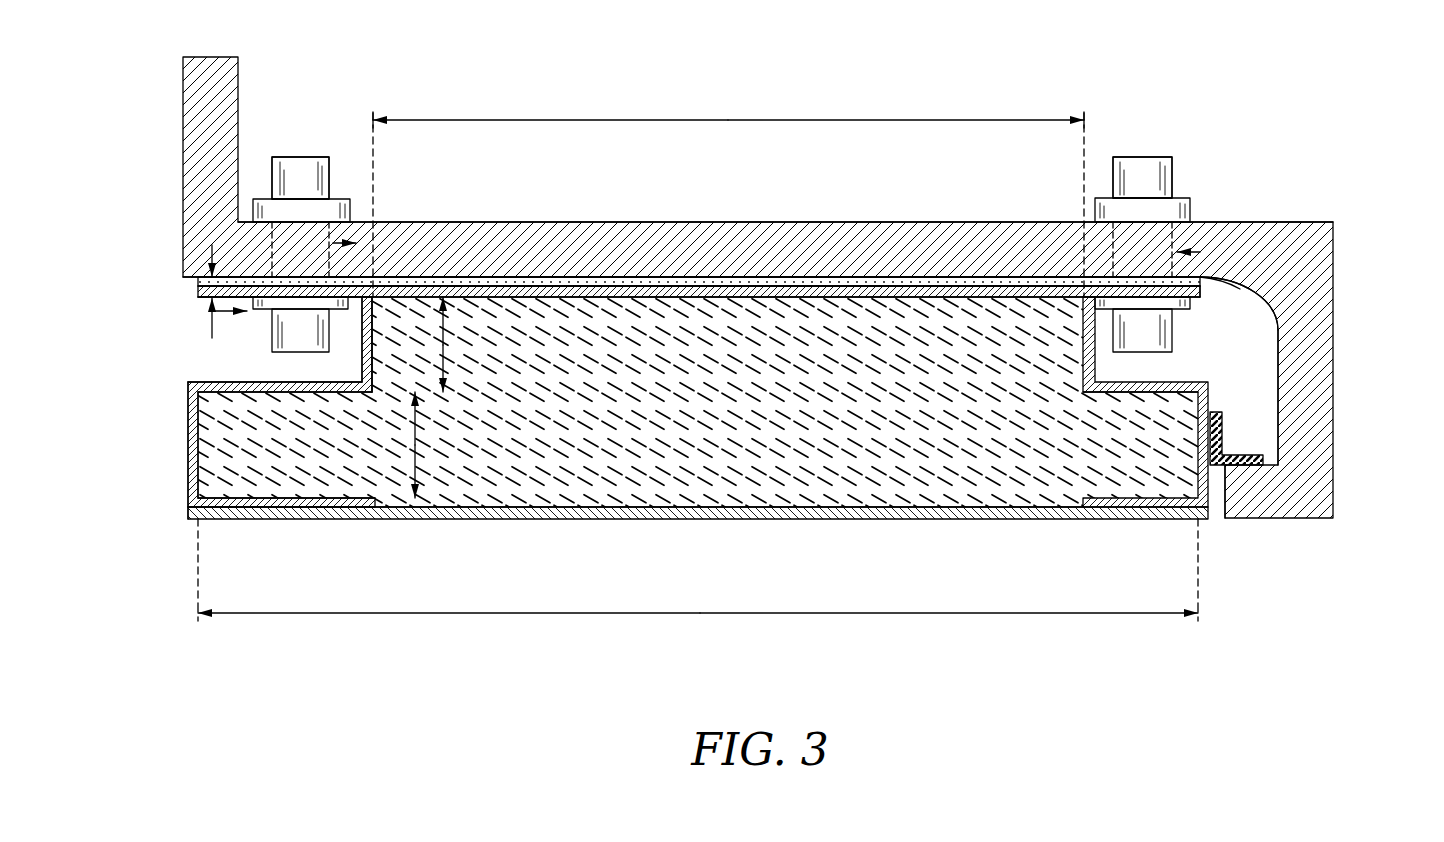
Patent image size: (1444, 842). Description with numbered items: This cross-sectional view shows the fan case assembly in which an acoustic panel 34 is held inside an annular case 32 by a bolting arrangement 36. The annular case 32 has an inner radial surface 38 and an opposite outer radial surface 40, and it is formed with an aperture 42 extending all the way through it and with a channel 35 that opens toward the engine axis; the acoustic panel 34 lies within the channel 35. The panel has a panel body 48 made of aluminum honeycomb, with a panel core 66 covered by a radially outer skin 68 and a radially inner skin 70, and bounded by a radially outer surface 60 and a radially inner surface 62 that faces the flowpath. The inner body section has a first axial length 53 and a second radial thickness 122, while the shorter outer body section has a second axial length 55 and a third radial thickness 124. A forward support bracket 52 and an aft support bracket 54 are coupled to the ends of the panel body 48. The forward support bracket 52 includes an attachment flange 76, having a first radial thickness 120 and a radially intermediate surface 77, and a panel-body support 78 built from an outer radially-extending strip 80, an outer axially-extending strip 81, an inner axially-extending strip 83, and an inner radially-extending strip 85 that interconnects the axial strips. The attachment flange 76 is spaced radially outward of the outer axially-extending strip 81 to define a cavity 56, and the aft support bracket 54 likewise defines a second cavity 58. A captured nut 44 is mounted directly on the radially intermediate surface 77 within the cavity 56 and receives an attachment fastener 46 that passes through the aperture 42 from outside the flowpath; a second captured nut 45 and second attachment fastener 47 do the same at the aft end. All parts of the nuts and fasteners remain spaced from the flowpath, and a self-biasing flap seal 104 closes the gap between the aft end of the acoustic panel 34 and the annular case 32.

The annular case 32 is at (1262, 210).
The acoustic panel 34 is at (660, 556).
The channel 35 is at (1260, 430).
The bolting arrangement 36 is at (316, 128).
The inner radial surface 38 is at (606, 283).
The outer radial surface 40 is at (843, 222).
The aperture 42 is at (360, 242).
The captured nut 44 is at (212, 311).
The captured nut 45 is at (1185, 313).
The attachment fastener 46 is at (290, 160).
The attachment fastener 47 is at (1180, 125).
The panel body 48 is at (1209, 368).
The forward support bracket 52 is at (180, 522).
The first axial length 53 is at (427, 613).
The aft support bracket 54 is at (1225, 393).
The second axial length 55 is at (713, 119).
The cavity 56 is at (192, 363).
The second cavity 58 is at (1199, 328).
The radially outer surface 60 is at (693, 277).
The radially inner surface 62 is at (566, 520).
The panel core 66 is at (832, 460).
The radially outer skin 68 is at (768, 280).
The radially inner skin 70 is at (762, 508).
The attachment flange 76 is at (178, 295).
The radially intermediate surface 77 is at (238, 318).
The panel-body support 78 is at (124, 505).
The outer radially-extending strip 80 is at (368, 333).
The outer axially-extending strip 81 is at (244, 382).
The inner axially-extending strip 83 is at (306, 503).
The inner radially-extending strip 85 is at (192, 432).
The seal 104 is at (1240, 441).
The first radial thickness 120 is at (212, 336).
The second radial thickness 122 is at (418, 458).
The third radial thickness 124 is at (445, 338).